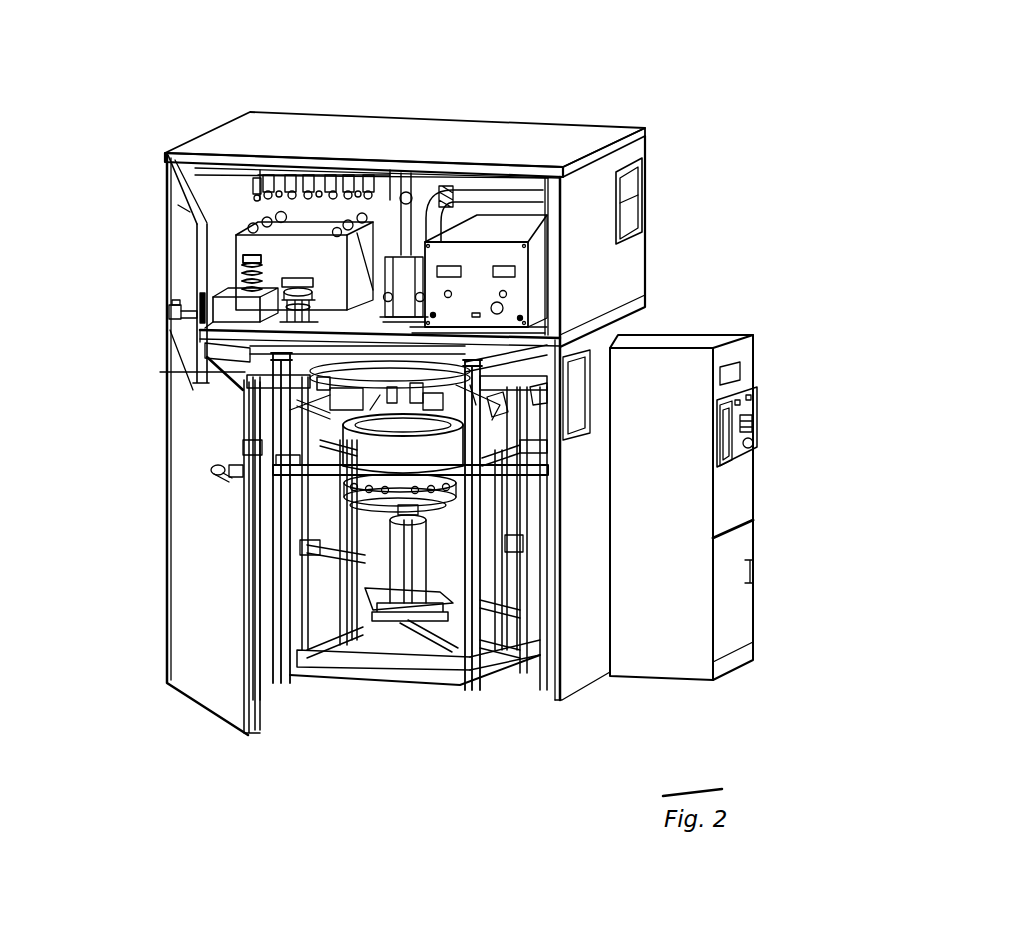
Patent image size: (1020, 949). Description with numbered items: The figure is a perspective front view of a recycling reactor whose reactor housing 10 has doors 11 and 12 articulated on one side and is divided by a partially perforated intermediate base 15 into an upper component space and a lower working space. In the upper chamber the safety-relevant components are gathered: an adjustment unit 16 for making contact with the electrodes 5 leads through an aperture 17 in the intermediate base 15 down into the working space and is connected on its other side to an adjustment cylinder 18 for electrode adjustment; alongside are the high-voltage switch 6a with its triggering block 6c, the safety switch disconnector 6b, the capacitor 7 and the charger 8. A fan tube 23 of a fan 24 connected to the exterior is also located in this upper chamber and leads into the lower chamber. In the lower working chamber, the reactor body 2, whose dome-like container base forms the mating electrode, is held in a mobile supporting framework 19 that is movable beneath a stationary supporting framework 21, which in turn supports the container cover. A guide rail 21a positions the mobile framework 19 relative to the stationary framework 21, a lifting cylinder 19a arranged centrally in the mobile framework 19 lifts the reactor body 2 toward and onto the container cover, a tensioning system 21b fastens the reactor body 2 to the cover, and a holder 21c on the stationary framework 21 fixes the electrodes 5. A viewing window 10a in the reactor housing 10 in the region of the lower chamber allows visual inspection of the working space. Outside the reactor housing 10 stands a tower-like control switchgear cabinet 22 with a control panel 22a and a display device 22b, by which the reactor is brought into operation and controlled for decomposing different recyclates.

The reactor body 2 is at (412, 450).
The electrodes 5 is at (240, 375).
The high-voltage switch 6a is at (215, 298).
The safety switch disconnector 6b is at (260, 182).
The triggering block 6c is at (248, 307).
The capacitor 7 is at (273, 250).
The charger 8 is at (497, 308).
The reactor housing 10 is at (440, 132).
The viewing window 10a is at (600, 358).
The door 11 is at (186, 216).
The door 12 is at (207, 515).
The intermediate base 15 is at (182, 300).
The adjustment unit 16 is at (528, 262).
The aperture 17 is at (343, 172).
The adjustment cylinder 18 is at (408, 193).
The mobile supporting framework 19 is at (238, 573).
The lifting cylinder 19a is at (407, 553).
The stationary supporting framework 21 is at (470, 587).
The guide rail 21a is at (237, 450).
The tensioning system 21b is at (237, 352).
The holder 21c is at (393, 372).
The control switchgear cabinet 22 is at (738, 475).
The control panel 22a is at (748, 443).
The display device 22b is at (720, 438).
The fan tube 23 is at (447, 193).
The fan 24 is at (630, 215).